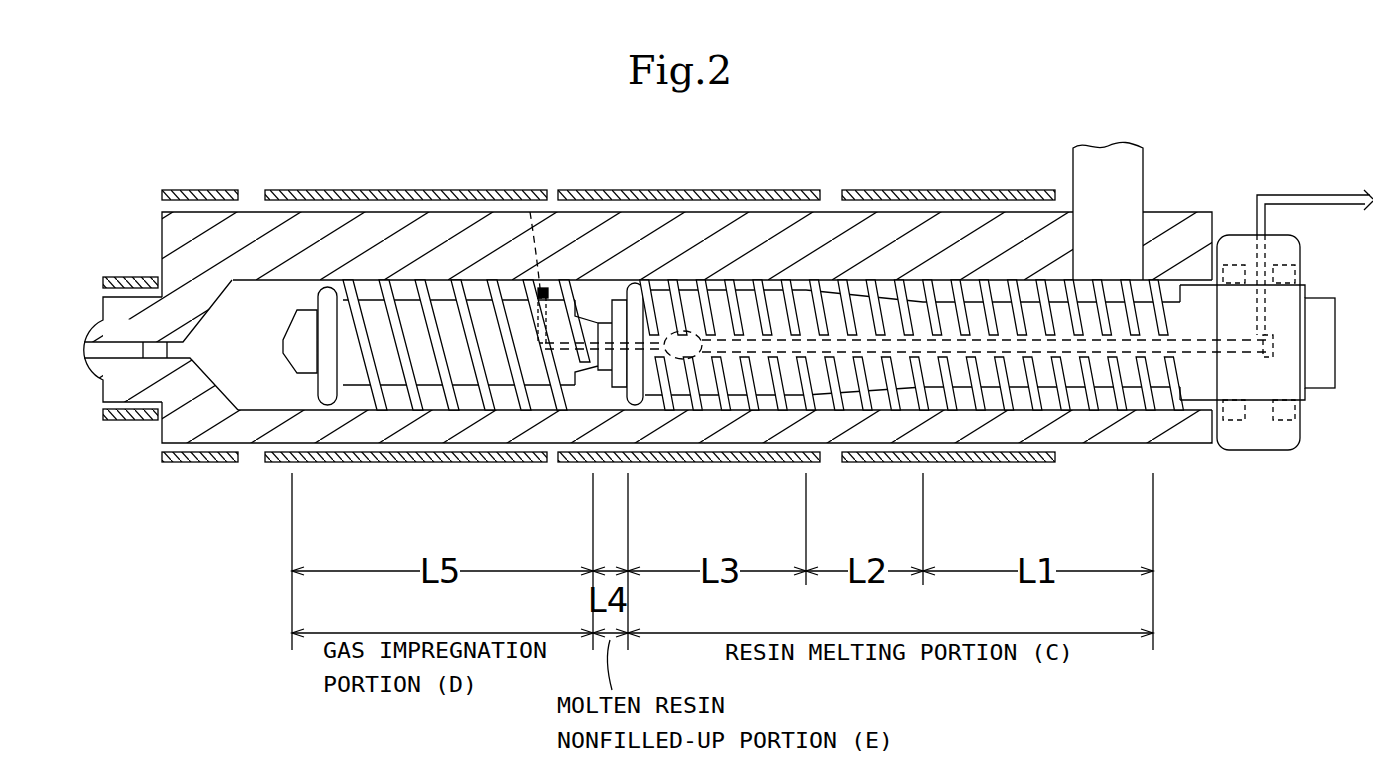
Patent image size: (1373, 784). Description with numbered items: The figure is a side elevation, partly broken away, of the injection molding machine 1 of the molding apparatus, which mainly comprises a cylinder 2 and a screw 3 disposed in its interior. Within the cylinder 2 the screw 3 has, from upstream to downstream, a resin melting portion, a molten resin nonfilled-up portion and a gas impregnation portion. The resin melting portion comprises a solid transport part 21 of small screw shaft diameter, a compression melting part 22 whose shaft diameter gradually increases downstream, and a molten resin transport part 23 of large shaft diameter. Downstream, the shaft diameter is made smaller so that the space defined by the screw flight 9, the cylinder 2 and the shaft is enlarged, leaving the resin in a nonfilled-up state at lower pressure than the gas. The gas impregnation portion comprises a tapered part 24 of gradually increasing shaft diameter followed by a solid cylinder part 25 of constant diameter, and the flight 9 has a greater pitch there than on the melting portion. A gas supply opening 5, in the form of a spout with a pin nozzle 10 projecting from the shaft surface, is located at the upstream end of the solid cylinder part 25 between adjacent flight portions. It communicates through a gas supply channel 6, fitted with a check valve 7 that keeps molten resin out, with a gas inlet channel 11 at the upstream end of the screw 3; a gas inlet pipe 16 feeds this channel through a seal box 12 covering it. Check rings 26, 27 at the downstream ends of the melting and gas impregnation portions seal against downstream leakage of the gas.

The injection molding machine 1 is at (380, 232).
The cylinder 2 is at (460, 430).
The screw 3 is at (393, 378).
The gas supply opening 5 is at (530, 212).
The gas supply channel 6 is at (847, 352).
The check valve 7 is at (715, 360).
The screw flight 9 is at (493, 287).
The pin nozzle 10 is at (553, 292).
The gas inlet channel 11 is at (1265, 320).
The seal box 12 is at (1285, 452).
The gas inlet pipe 16 is at (1300, 200).
The solid transport part 21 is at (1000, 310).
The compression melting part 22 is at (855, 307).
The molten resin transport part 23 is at (742, 297).
The tapered part 24 is at (602, 327).
The solid cylinder part 25 is at (443, 308).
The check ring 26 is at (636, 292).
The check ring 27 is at (328, 297).